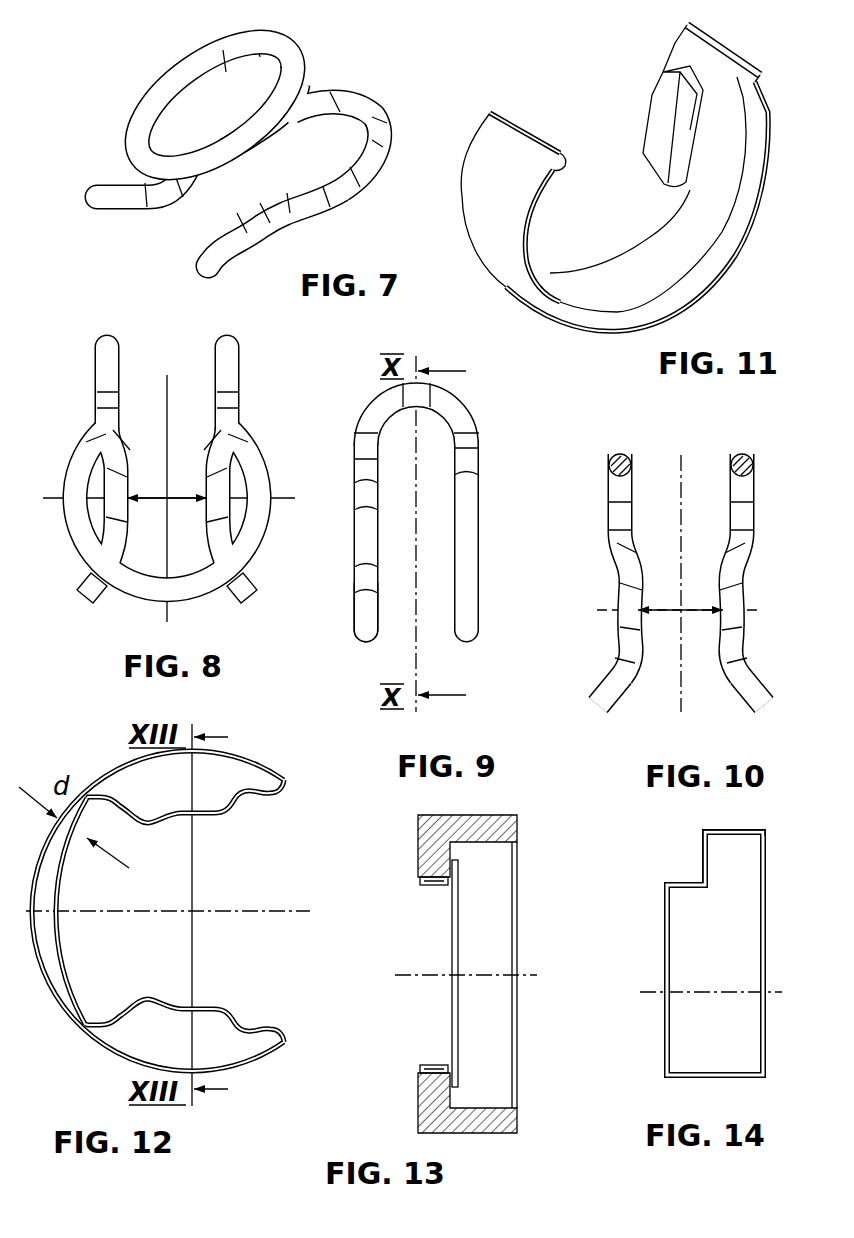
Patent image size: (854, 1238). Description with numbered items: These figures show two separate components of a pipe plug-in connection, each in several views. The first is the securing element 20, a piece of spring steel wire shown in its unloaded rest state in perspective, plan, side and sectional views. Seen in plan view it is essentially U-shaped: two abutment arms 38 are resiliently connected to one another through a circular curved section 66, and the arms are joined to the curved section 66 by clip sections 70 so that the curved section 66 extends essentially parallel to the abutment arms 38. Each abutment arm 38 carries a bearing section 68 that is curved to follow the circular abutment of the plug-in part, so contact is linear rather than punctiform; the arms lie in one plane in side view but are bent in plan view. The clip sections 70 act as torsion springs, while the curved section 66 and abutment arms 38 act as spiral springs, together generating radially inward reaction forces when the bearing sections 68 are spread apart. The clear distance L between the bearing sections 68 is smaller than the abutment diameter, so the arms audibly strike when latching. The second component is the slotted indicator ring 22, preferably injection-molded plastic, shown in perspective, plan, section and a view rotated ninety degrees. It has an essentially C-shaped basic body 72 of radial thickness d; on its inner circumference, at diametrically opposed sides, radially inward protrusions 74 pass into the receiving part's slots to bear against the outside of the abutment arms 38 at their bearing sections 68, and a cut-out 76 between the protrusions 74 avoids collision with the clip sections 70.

In FIG. 7, the securing element 20 is at (252, 149).
In FIG. 8, the securing element 20 is at (154, 478).
In FIG. 9, the securing element 20 is at (417, 499).
In FIG. 10, the securing element 20 is at (682, 578).
In FIG. 11, the indicator ring 22 is at (614, 178).
In FIG. 12, the indicator ring 22 is at (178, 926).
In FIG. 13, the indicator ring 22 is at (491, 961).
In FIG. 14, the indicator ring 22 is at (681, 974).
In FIG. 7, the abutment arms 38 is at (118, 184).
In FIG. 8, the abutment arms 38 is at (233, 595).
In FIG. 9, the abutment arms 38 is at (357, 587).
In FIG. 10, the abutment arms 38 is at (727, 675).
In FIG. 7, the curved section 66 is at (135, 110).
In FIG. 8, the curved section 66 is at (90, 543).
In FIG. 9, the curved section 66 is at (467, 547).
In FIG. 7, the bearing section 68 is at (260, 217).
In FIG. 8, the bearing section 68 is at (220, 507).
In FIG. 9, the bearing section 68 is at (362, 538).
In FIG. 10, the bearing section 68 is at (733, 620).
In FIG. 7, the clip sections 70 is at (303, 73).
In FIG. 8, the clip sections 70 is at (107, 353).
In FIG. 9, the clip sections 70 is at (409, 398).
In FIG. 10, the clip sections 70 is at (610, 460).
In FIG. 11, the basic body 72 is at (727, 232).
In FIG. 12, the basic body 72 is at (109, 1047).
In FIG. 13, the basic body 72 is at (518, 1033).
In FIG. 14, the basic body 72 is at (662, 922).
In FIG. 11, the protrusions 74 is at (667, 123).
In FIG. 12, the protrusions 74 is at (161, 1019).
In FIG. 13, the protrusions 74 is at (430, 1067).
In FIG. 11, the cut-out 76 is at (603, 267).
In FIG. 12, the cut-out 76 is at (68, 994).
In FIG. 13, the cut-out 76 is at (450, 943).
In FIG. 14, the cut-out 76 is at (700, 867).